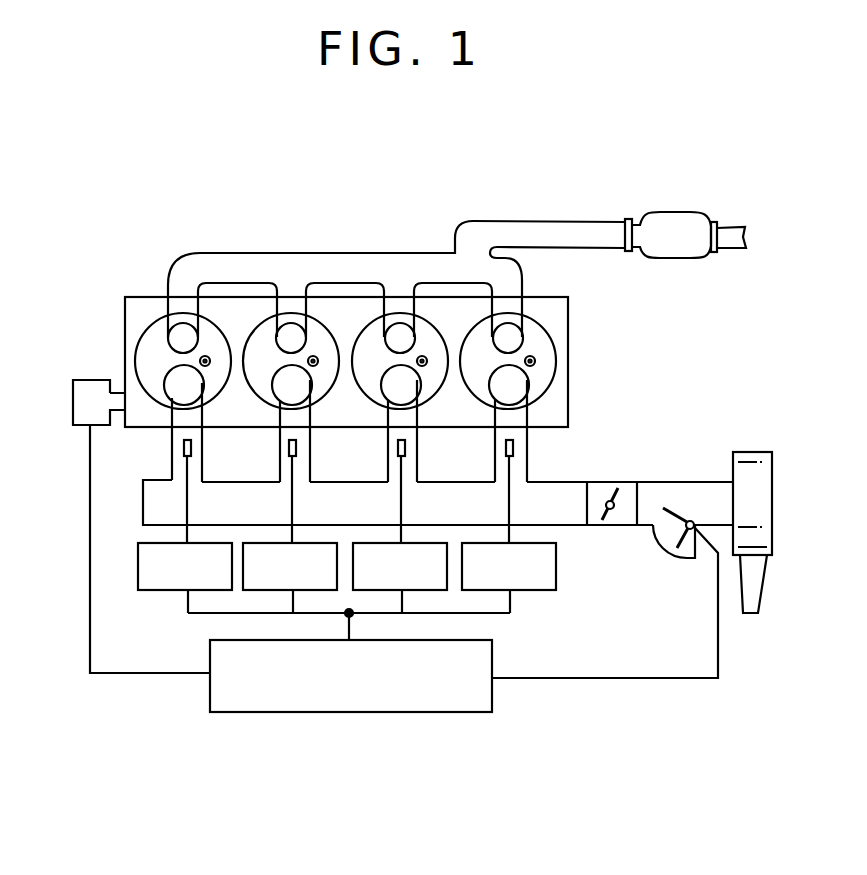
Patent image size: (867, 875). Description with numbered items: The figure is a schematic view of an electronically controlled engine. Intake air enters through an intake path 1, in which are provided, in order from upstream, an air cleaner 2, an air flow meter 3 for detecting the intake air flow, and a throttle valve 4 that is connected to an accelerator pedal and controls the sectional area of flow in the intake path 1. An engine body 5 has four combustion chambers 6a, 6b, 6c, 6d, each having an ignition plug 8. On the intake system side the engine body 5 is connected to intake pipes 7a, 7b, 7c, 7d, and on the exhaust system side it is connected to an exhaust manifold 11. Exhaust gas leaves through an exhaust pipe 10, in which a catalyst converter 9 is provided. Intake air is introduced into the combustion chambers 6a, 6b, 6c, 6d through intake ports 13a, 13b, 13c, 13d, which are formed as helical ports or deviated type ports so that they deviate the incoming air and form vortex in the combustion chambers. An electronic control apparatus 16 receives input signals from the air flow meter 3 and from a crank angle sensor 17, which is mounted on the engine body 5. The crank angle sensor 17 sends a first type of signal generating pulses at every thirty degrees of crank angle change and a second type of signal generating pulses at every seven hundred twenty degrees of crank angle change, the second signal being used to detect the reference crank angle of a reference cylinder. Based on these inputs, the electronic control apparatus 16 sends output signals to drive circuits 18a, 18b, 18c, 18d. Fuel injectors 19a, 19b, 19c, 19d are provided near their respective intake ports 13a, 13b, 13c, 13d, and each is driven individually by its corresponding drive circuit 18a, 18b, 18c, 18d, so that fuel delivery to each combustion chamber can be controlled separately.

The intake path 1 is at (578, 528).
The air cleaner 2 is at (768, 542).
The air flow meter 3 is at (673, 508).
The throttle valve 4 is at (607, 520).
The engine body 5 is at (570, 325).
The combustion chamber 6a is at (148, 358).
The combustion chamber 6b is at (265, 333).
The combustion chamber 6c is at (375, 333).
The combustion chamber 6d is at (480, 335).
The intake pipe 7a is at (172, 458).
The intake pipe 7b is at (312, 462).
The intake pipe 7c is at (420, 463).
The intake pipe 7d is at (527, 467).
The ignition plug 8 is at (208, 356).
The catalyst converter 9 is at (667, 212).
The exhaust pipe 10 is at (578, 221).
The exhaust manifold 11 is at (305, 253).
The intake port 13a is at (200, 418).
The intake port 13b is at (303, 420).
The intake port 13c is at (412, 420).
The intake port 13d is at (520, 421).
The electronic control apparatus 16 is at (493, 657).
The crank angle sensor 17 is at (82, 400).
The drive circuit 18a is at (217, 543).
The drive circuit 18b is at (320, 543).
The drive circuit 18c is at (427, 543).
The drive circuit 18d is at (538, 543).
The fuel injector 19a is at (193, 447).
The fuel injector 19b is at (288, 453).
The fuel injector 19c is at (406, 447).
The fuel injector 19d is at (514, 447).